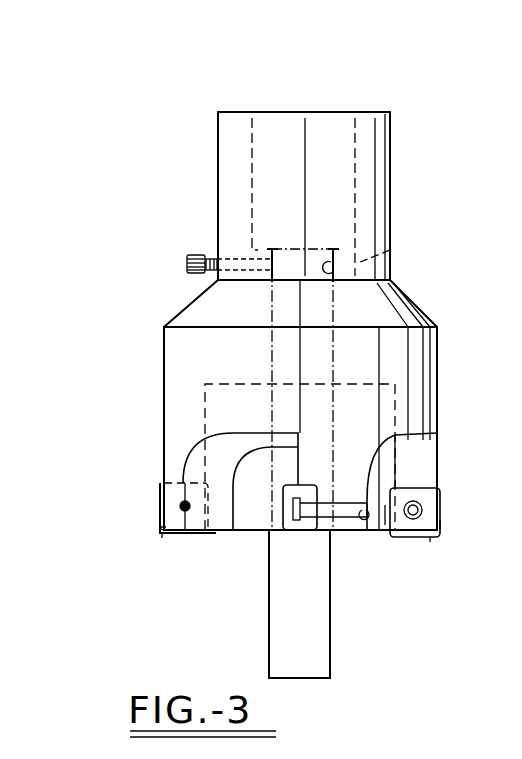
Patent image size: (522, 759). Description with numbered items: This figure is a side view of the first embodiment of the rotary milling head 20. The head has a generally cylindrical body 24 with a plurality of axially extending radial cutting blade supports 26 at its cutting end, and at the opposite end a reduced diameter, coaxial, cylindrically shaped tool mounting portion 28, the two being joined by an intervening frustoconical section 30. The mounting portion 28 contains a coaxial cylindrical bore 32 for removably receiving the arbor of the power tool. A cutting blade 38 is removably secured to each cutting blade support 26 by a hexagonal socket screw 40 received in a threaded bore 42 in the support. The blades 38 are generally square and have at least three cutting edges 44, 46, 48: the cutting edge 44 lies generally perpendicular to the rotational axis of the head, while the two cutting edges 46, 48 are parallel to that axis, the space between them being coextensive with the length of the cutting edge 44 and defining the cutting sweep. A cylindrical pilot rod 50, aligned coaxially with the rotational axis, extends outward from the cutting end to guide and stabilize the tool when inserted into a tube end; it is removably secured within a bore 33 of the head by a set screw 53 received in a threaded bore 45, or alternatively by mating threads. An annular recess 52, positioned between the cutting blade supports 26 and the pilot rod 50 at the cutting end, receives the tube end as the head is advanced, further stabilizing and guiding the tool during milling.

The rotary milling head 20 is at (212, 134).
The cylindrical body 24 is at (164, 360).
The cutting blade supports 26 is at (203, 535).
The tool mounting portion 28 is at (217, 183).
The frustoconical section 30 is at (193, 293).
The cylindrical bore 32 is at (255, 125).
The bore 33 is at (400, 249).
The cutting blade 38 is at (158, 493).
The hexagonal socket screw 40 is at (180, 507).
The threaded bore 42 is at (333, 532).
The cutting edge 44 is at (162, 538).
The threaded bore 45 is at (224, 245).
The cutting edge 46 is at (383, 522).
The cutting edge 48 is at (157, 527).
The pilot rod 50 is at (272, 315).
The annular recess 52 is at (205, 408).
The set screw 53 is at (188, 258).